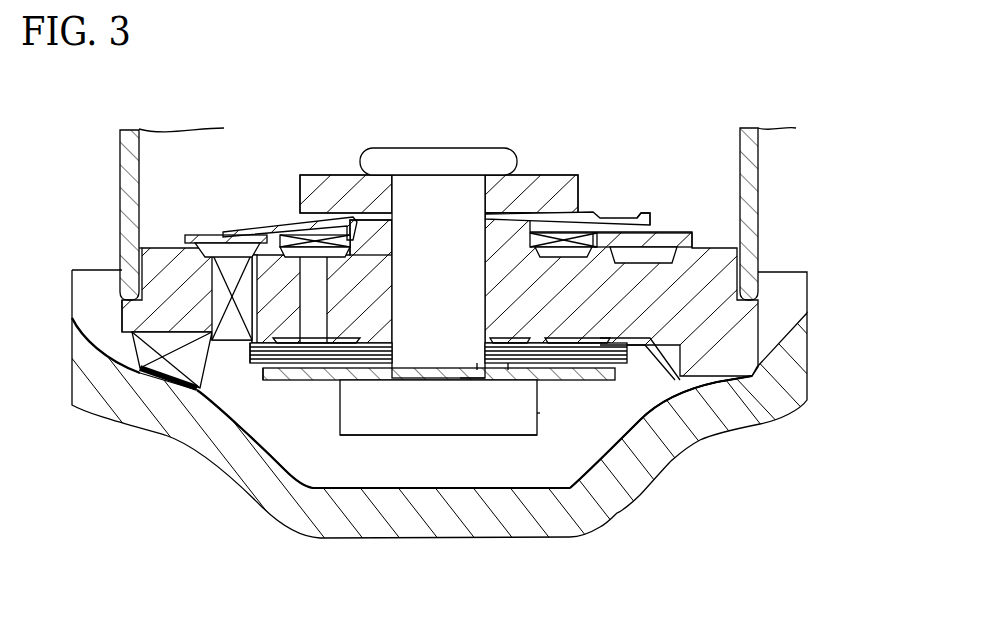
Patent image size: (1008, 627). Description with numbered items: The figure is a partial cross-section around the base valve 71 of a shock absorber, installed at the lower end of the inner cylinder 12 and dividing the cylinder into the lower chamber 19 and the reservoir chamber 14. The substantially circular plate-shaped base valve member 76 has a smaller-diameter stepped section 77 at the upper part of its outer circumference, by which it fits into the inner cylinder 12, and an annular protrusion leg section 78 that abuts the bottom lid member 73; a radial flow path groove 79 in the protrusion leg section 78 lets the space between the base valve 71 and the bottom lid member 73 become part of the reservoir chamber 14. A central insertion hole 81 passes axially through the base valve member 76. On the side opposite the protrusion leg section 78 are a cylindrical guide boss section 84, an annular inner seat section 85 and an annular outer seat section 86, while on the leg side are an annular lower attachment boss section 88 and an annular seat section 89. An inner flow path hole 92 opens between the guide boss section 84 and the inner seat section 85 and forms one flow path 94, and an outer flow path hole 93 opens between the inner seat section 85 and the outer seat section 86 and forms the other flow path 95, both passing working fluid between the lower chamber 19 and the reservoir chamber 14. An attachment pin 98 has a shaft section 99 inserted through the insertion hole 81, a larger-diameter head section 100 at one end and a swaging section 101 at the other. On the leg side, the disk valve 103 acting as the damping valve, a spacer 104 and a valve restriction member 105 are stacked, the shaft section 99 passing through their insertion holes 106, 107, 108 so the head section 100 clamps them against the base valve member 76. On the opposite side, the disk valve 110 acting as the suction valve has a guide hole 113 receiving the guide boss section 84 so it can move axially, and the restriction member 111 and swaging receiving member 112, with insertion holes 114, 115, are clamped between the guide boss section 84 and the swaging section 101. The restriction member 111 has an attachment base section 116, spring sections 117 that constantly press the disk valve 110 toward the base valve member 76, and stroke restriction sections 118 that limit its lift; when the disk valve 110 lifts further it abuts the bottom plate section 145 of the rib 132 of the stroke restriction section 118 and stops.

The inner cylinder 12 is at (760, 148).
The reservoir chamber 14 is at (777, 167).
The lower chamber 19 is at (176, 148).
The base valve 71 is at (162, 240).
The bottom lid member 73 is at (777, 377).
The base valve member 76 is at (140, 272).
The stepped section 77 is at (120, 274).
The protrusion leg section 78 is at (713, 353).
The flow path groove 79 is at (187, 335).
The insertion hole 81 is at (406, 447).
The guide boss section 84 is at (372, 233).
The inner seat section 85 is at (282, 237).
The outer seat section 86 is at (195, 237).
The lower attachment boss section 88 is at (362, 380).
The seat section 89 is at (290, 347).
The flow path hole 92 is at (310, 380).
The flow path hole 93 is at (245, 337).
The flow path 94 is at (303, 368).
The flow path 95 is at (252, 348).
The attachment pin 98 is at (366, 348).
The shaft section 99 is at (443, 220).
The head section 100 is at (540, 413).
The swaging section 101 is at (463, 160).
The disk valve 103 is at (640, 380).
The spacer 104 is at (508, 370).
The valve restriction member 105 is at (580, 378).
The insertion hole 106 is at (460, 372).
The insertion hole 107 is at (470, 372).
The insertion hole 108 is at (477, 370).
The disk valve 110 is at (640, 243).
The restriction member 111 is at (662, 207).
The swaging receiving member 112 is at (517, 183).
The guide hole 113 is at (353, 240).
The insertion hole 114 is at (482, 217).
The insertion hole 115 is at (393, 192).
The attachment base section 116 is at (603, 207).
The spring section 117 is at (277, 234).
The stroke restriction section 118 is at (600, 210).
The rib 132 is at (600, 277).
The bottom plate section 145 is at (640, 256).